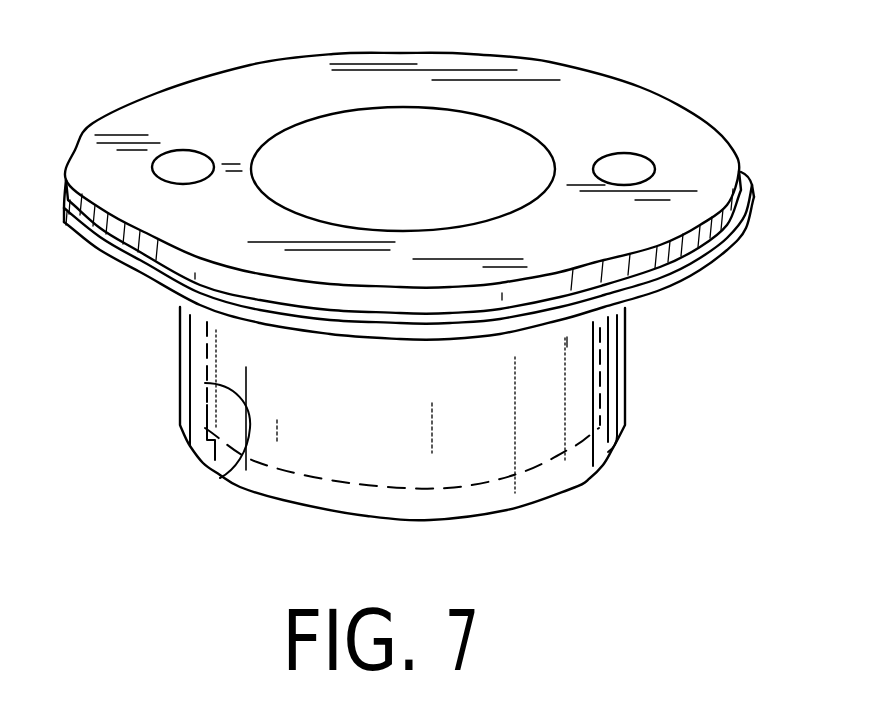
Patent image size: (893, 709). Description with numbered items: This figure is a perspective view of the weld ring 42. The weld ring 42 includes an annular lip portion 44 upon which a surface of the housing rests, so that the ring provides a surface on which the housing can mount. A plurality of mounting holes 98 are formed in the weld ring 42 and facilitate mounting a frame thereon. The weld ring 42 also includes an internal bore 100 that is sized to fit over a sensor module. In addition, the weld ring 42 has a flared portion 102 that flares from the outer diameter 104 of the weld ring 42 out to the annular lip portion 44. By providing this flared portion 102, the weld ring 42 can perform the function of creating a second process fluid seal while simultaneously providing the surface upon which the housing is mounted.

The weld ring 42 is at (570, 485).
The annular lip portion 44 is at (749, 178).
The mounting holes 98 is at (177, 150).
The internal bore 100 is at (242, 447).
The flared portion 102 is at (600, 345).
The outer diameter 104 is at (178, 345).